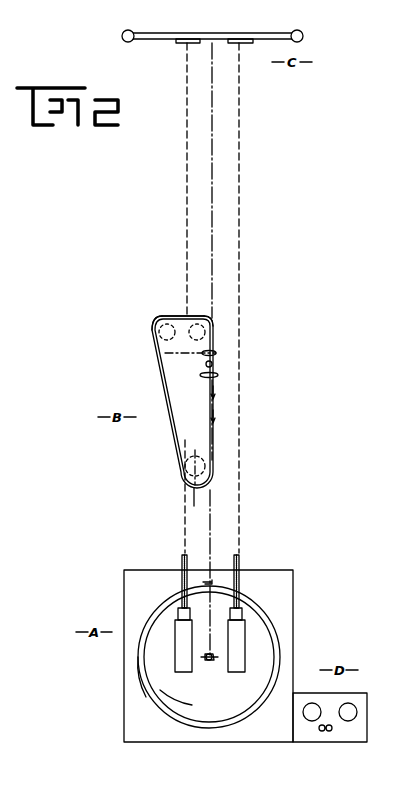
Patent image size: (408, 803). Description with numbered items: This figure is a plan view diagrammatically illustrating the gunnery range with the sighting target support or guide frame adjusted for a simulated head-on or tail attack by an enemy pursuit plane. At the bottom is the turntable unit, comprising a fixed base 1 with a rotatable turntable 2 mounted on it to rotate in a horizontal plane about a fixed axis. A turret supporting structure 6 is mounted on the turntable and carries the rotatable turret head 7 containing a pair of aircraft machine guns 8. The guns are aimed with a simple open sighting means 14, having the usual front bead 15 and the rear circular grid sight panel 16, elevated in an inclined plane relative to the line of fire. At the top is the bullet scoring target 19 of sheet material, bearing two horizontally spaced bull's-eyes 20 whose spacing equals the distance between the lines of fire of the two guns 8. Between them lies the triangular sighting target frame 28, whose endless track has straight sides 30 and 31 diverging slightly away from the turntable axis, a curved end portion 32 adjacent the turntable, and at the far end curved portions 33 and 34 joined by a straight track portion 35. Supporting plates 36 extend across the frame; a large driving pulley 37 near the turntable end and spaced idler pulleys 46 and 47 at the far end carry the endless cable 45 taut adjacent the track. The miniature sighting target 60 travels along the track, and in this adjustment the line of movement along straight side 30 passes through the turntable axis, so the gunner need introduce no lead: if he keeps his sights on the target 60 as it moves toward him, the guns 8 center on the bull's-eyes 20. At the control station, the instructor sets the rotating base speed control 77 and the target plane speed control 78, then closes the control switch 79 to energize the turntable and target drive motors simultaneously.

The fixed base 1 is at (278, 612).
The turntable 2 is at (263, 625).
The turret supporting structure 6 is at (141, 702).
The turret head 7 is at (195, 702).
The aircraft machine guns 8 is at (182, 578).
The sighting means 14 is at (222, 639).
The front bead 15 is at (209, 582).
The rear circular grid sight panel 16 is at (211, 663).
The bullet scoring target 19 is at (283, 22).
The bull's-eyes 20 is at (180, 43).
The sighting target frame 28 is at (200, 426).
The straight track side 30 is at (215, 395).
The straight track side 31 is at (158, 374).
The curved end portion of track 32 is at (192, 494).
The curved track portion 33 is at (210, 316).
The curved track portion 34 is at (155, 322).
The straight track portion 35 is at (176, 316).
The supporting plates 36 is at (165, 353).
The driving pulley 37 is at (192, 470).
The endless cable 45 is at (216, 353).
The idler pulley 46 is at (160, 335).
The idler pulley 47 is at (205, 331).
The sighting target 60 is at (216, 376).
The rotating base speed control 77 is at (312, 722).
The target plane speed adjusting control 78 is at (357, 714).
The control switch 79 is at (325, 732).